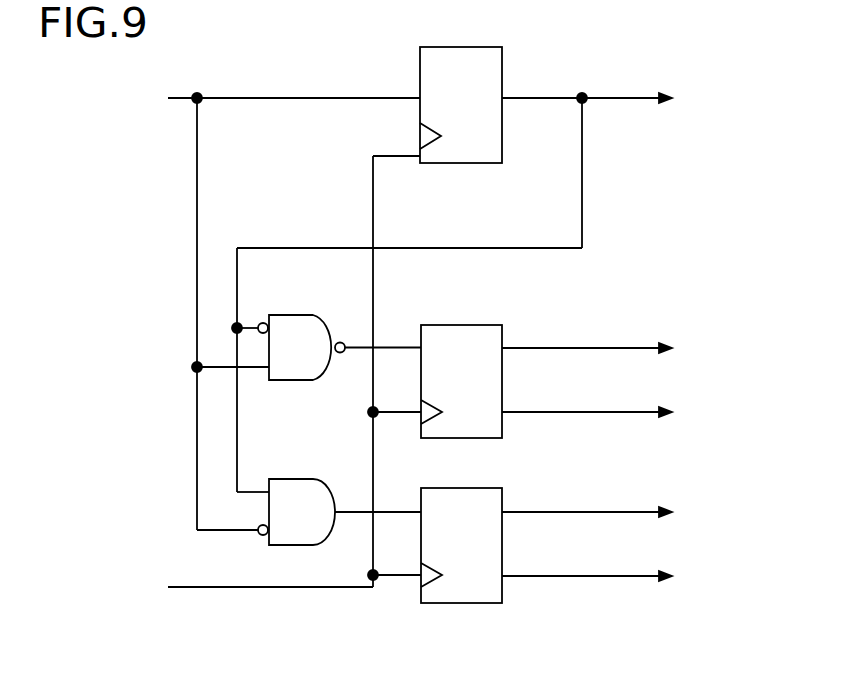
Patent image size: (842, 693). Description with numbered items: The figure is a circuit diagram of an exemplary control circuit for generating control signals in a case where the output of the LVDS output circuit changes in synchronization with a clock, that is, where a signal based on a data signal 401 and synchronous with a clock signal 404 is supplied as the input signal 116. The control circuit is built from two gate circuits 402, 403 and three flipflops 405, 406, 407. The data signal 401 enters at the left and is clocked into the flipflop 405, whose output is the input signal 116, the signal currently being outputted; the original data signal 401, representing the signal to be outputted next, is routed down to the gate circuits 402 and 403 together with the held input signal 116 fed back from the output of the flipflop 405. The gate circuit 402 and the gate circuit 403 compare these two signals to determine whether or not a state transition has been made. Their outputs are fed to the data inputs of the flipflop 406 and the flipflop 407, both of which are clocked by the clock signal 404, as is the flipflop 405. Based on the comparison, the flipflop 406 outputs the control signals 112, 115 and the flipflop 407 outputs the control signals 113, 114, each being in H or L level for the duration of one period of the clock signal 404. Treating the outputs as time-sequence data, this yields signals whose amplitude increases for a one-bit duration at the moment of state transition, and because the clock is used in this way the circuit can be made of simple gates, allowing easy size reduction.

The data signal 401 is at (266, 305).
The gate circuit 402 is at (292, 315).
The gate circuit 403 is at (292, 479).
The clock signal 404 is at (267, 380).
The flipflop 405 is at (460, 163).
The flipflop 406 is at (460, 325).
The flipflop 407 is at (460, 603).
The control signal 112 is at (615, 347).
The control signal 113 is at (615, 512).
The control signal 114 is at (615, 577).
The control signal 115 is at (615, 411).
The input signal 116 is at (655, 97).